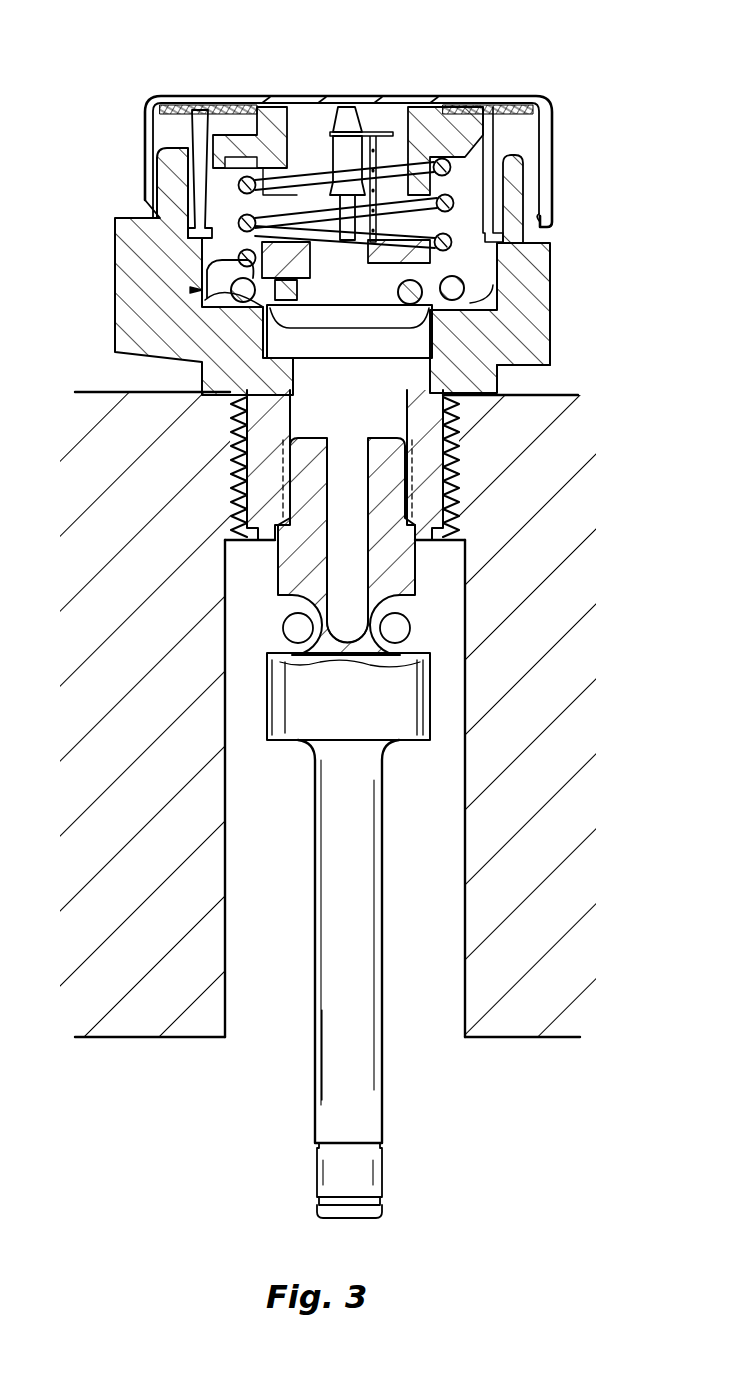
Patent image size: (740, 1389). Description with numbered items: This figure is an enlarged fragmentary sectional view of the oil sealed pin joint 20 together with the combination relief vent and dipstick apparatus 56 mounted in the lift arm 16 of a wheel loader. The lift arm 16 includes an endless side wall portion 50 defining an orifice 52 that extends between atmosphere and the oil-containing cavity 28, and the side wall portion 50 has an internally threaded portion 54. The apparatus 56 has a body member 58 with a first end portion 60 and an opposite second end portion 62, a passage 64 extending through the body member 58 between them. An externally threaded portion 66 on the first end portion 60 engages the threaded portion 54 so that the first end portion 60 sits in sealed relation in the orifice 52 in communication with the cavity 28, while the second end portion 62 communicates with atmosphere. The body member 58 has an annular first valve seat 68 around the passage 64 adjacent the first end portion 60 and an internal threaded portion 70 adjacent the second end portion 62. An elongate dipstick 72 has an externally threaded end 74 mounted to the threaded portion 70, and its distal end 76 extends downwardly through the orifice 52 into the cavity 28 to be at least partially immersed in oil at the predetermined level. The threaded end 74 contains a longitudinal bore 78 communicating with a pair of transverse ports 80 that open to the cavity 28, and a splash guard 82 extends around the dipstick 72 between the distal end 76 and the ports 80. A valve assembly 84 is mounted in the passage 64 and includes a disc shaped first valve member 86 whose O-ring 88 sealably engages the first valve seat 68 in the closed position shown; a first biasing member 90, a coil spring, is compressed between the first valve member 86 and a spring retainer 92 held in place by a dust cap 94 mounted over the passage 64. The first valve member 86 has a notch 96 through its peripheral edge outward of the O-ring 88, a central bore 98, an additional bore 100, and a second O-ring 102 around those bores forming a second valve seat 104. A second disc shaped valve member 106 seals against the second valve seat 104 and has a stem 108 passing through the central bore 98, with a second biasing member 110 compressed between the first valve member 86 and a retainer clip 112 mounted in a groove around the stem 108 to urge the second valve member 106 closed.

The lift arm 16 is at (95, 392).
The oil sealed pin joint 20 is at (600, 1045).
The cavity 28 is at (500, 1060).
The side wall portion 50 is at (465, 835).
The orifice 52 is at (262, 1005).
The internally threaded portion 54 is at (452, 490).
The combination relief vent and dipstick apparatus 56 is at (386, 1183).
The body member 58 is at (555, 375).
The first end portion 60 is at (443, 500).
The second end portion 62 is at (552, 250).
The passage 64 is at (443, 410).
The externally threaded portion 66 is at (455, 470).
The first valve seat 68 is at (465, 290).
The internal threaded portion 70 is at (290, 480).
The dipstick 72 is at (385, 1097).
The externally threaded end 74 is at (318, 438).
The distal end 76 is at (316, 1180).
The bore 78 is at (345, 575).
The ports 80 is at (283, 630).
The splash guard 82 is at (432, 722).
The valve assembly 84 is at (190, 290).
The first valve member 86 is at (203, 272).
The O-ring 88 is at (263, 307).
The first biasing member 90 is at (250, 174).
The spring retainer 92 is at (213, 137).
The dust cap 94 is at (552, 160).
The notch 96 is at (552, 345).
The central bore 98 is at (380, 232).
The additional bore 100 is at (302, 195).
The second O-ring 102 is at (350, 330).
The second valve seat 104 is at (410, 305).
The second valve member 106 is at (335, 332).
The stem 108 is at (345, 100).
The second biasing member 110 is at (415, 112).
The retainer clip 112 is at (378, 132).